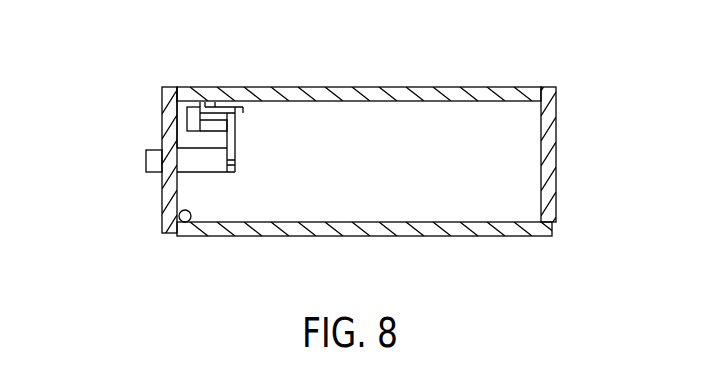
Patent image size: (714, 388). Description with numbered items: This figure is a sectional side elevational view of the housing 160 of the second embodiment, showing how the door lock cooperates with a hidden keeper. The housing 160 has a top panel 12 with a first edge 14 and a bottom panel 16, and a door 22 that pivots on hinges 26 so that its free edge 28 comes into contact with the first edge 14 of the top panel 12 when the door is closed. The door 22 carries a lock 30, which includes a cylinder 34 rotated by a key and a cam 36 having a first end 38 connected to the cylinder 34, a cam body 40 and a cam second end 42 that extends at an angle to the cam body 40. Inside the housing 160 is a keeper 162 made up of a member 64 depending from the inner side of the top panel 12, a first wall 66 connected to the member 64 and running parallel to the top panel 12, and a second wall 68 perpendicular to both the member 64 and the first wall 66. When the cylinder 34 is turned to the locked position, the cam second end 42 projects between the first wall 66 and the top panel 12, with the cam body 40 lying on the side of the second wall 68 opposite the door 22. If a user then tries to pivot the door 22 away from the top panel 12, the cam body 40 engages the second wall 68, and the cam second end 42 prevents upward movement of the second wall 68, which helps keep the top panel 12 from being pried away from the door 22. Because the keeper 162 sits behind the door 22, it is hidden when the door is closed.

The top panel 12 is at (367, 87).
The first edge 14 is at (181, 102).
The bottom panel 16 is at (339, 238).
The door 22 is at (168, 195).
The hinges 26 is at (191, 214).
The free edge 28 is at (177, 92).
The lock 30 is at (136, 162).
The cylinder 34 is at (202, 158).
The cam 36 is at (243, 138).
The first end 38 is at (237, 170).
The cam body 40 is at (236, 155).
The cam second end 42 is at (238, 110).
The member 64 is at (211, 105).
The first wall 66 is at (196, 128).
The second wall 68 is at (195, 113).
The housing 160 is at (493, 59).
The keeper 162 is at (182, 118).